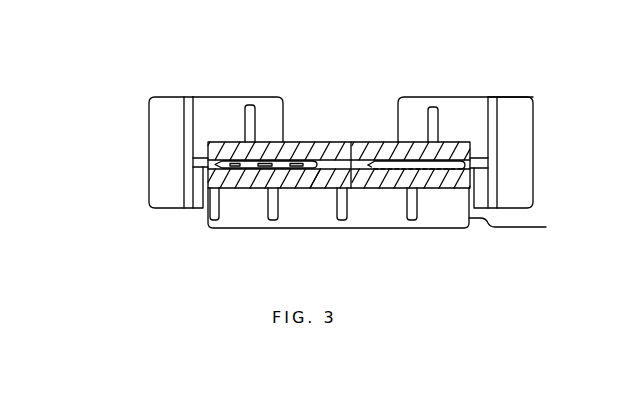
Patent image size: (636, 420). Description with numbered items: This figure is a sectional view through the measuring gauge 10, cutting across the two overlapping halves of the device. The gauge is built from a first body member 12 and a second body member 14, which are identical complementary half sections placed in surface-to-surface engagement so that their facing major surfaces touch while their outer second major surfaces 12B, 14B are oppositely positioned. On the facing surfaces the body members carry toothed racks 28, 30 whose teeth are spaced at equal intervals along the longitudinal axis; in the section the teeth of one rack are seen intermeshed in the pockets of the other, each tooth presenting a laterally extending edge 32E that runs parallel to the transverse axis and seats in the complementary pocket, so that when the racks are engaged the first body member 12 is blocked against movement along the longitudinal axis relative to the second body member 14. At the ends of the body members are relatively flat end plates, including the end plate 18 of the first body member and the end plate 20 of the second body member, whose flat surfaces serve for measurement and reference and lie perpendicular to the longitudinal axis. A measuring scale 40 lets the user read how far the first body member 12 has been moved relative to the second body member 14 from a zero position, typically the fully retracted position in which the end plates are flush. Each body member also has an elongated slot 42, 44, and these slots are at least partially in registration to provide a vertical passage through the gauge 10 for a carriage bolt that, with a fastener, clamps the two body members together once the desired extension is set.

The measuring gauge 10 is at (374, 151).
The first body member 12 is at (372, 148).
The second major surface of first body member 12B is at (302, 142).
The second body member 14 is at (432, 186).
The second major surface of second body member 14B is at (245, 186).
The end plate 18 is at (534, 121).
The end plate 20 is at (519, 227).
The toothed rack 28 is at (443, 163).
The toothed rack 30 is at (390, 168).
The tooth edge 32E is at (378, 162).
The measuring scale 40 is at (229, 160).
The elongated slot 42 is at (343, 158).
The elongated slot 44 is at (328, 180).